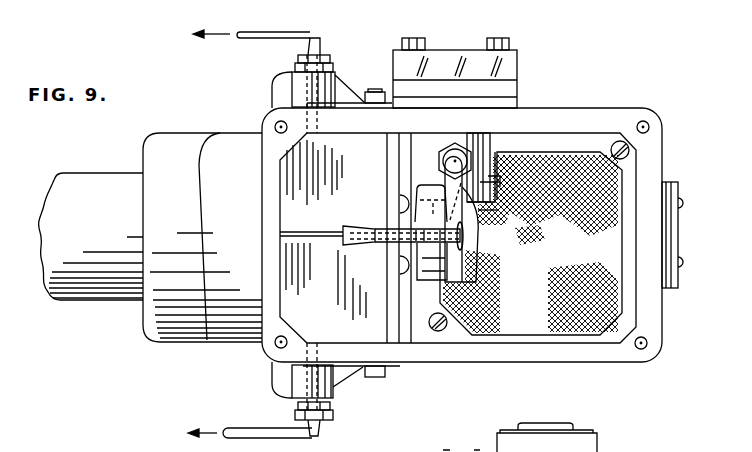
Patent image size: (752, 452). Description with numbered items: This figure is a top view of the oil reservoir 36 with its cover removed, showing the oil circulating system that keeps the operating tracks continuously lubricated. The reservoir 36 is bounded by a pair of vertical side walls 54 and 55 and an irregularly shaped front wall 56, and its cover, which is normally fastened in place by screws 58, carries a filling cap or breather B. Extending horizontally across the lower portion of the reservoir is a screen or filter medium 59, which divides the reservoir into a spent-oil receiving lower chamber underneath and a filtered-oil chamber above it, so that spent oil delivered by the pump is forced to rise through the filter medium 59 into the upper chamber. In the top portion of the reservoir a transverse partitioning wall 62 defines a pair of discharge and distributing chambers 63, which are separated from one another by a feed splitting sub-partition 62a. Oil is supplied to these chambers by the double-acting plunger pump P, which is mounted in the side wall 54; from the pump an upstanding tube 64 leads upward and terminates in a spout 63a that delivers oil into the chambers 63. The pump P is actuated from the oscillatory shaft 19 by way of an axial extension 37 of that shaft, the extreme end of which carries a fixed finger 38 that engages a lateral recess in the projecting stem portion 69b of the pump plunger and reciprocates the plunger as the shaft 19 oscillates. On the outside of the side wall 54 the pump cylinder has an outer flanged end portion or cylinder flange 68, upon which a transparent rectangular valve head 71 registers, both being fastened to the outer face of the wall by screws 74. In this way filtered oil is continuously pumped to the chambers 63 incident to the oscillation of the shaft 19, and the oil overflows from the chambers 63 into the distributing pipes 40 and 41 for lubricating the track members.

The oscillatory shaft 19 is at (102, 288).
The oil reservoir 36 is at (603, 103).
The axial extension 37 is at (485, 250).
The finger 38 is at (475, 278).
The distributing pipe 40 is at (267, 28).
The distributing pipe 41 is at (260, 428).
The side wall 54 is at (573, 107).
The side wall 55 is at (517, 363).
The front wall 56 is at (262, 233).
The screws 58 is at (554, 443).
The filter medium 59 is at (616, 182).
The transverse partitioning wall 62 is at (392, 173).
The feed splitting sub-partition 62a is at (325, 237).
The discharge and distributing chambers 63 is at (331, 230).
The spout 63a is at (347, 226).
The upstanding tube 64 is at (444, 181).
The cylinder flange 68 is at (517, 88).
The stem portion 69b is at (497, 213).
The valve head 71 is at (443, 50).
The screws 74 is at (510, 38).
The filling cap or breather B is at (515, 440).
The plunger pump P is at (503, 181).